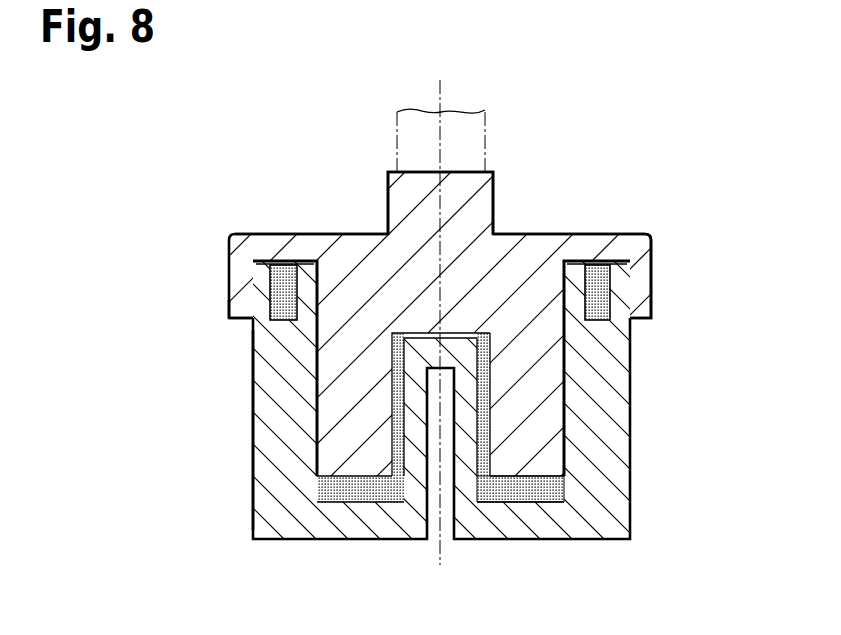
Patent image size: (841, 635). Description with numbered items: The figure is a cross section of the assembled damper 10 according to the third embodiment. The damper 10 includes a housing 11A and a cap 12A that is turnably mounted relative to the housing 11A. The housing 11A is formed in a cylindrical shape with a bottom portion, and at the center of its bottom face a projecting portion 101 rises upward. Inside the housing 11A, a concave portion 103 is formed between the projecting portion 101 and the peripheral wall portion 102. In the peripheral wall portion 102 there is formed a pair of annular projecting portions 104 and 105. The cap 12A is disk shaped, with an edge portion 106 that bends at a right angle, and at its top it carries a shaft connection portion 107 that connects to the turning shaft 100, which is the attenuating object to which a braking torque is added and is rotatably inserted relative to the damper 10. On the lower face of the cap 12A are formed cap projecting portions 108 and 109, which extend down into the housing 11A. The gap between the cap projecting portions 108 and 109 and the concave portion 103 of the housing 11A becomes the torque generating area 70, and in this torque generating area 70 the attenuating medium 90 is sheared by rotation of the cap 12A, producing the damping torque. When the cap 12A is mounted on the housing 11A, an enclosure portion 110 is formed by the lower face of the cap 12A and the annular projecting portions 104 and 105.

The damper 10 is at (218, 127).
The turning shaft 100 is at (397, 126).
The projecting portion 101 is at (456, 337).
The peripheral wall portion 102 is at (253, 485).
The concave portion 103 is at (341, 495).
The annular projecting portion 104 is at (574, 262).
The annular projecting portion 105 is at (642, 262).
The edge portion 106 is at (247, 316).
The shaft connection portion 107 is at (388, 208).
The cap projecting portion 108 is at (370, 484).
The cap projecting portion 109 is at (502, 494).
The enclosure portion 110 is at (600, 293).
The housing 11A is at (253, 388).
The cap 12A is at (232, 233).
The torque generating area 70 is at (555, 490).
The attenuating medium 90 is at (522, 494).